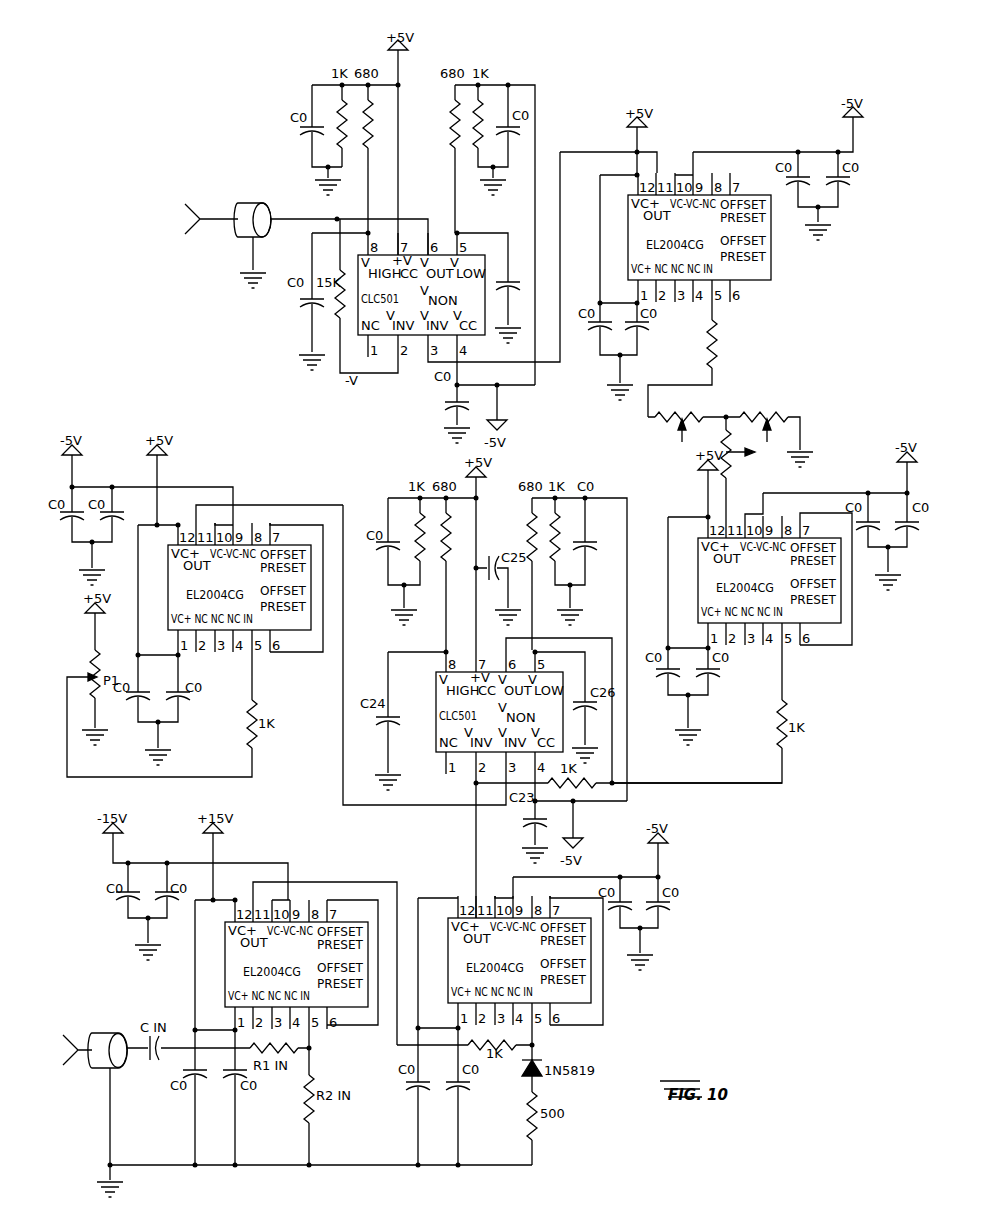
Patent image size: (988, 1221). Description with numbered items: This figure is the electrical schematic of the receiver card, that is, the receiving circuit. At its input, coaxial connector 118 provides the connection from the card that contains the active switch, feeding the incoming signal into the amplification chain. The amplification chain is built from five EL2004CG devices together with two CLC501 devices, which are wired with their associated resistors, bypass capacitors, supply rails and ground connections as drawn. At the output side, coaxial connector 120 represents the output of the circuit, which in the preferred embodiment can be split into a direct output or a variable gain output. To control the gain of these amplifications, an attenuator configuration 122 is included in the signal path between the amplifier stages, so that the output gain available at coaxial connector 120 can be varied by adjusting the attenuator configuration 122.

The coaxial connector 118 is at (78, 1030).
The coaxial connector 120 is at (235, 214).
The attenuator configuration 122 is at (767, 398).